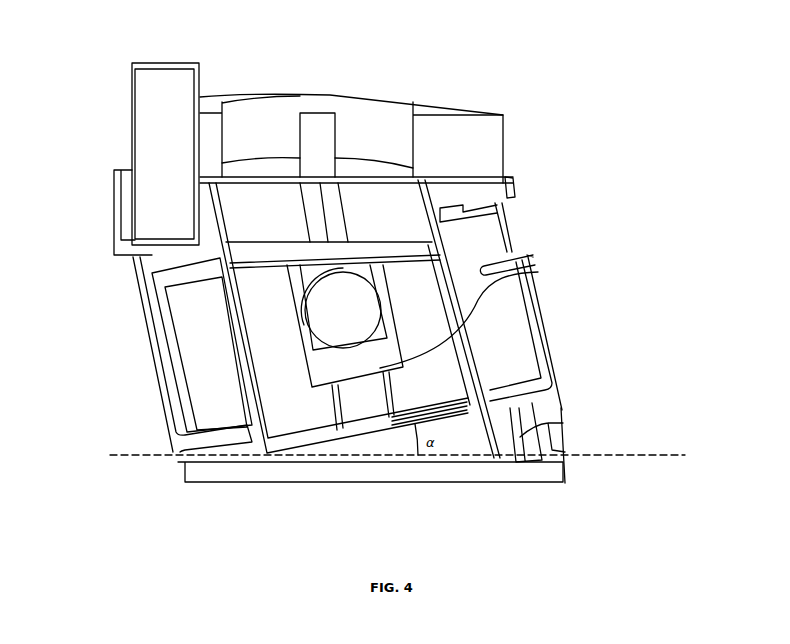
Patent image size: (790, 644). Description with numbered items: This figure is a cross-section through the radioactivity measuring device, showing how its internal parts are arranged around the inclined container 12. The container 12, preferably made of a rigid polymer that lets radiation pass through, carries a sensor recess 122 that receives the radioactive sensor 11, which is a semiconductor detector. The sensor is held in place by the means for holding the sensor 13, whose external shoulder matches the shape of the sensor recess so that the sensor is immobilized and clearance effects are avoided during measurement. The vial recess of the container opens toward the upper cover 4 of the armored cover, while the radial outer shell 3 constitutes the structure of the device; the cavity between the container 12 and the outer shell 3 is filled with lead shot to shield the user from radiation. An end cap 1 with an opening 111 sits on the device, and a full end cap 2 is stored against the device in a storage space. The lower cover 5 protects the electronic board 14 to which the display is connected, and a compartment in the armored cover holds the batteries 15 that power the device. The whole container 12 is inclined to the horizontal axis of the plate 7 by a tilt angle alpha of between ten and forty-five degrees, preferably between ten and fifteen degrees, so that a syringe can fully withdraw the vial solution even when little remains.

The end cap 1 is at (393, 110).
The opening 111 is at (310, 135).
The upper cover 4 is at (467, 159).
The full end cap 2 is at (165, 145).
The means for holding the sensor 13 is at (250, 232).
The radioactive sensor 11 is at (327, 315).
The batteries 15 is at (205, 378).
The lower cover 5 is at (185, 447).
The sensor recess 122 is at (450, 255).
The container 12 is at (533, 263).
The electronic board 14 is at (503, 347).
The radial outer shell 3 is at (520, 436).
The plate 7 is at (535, 475).